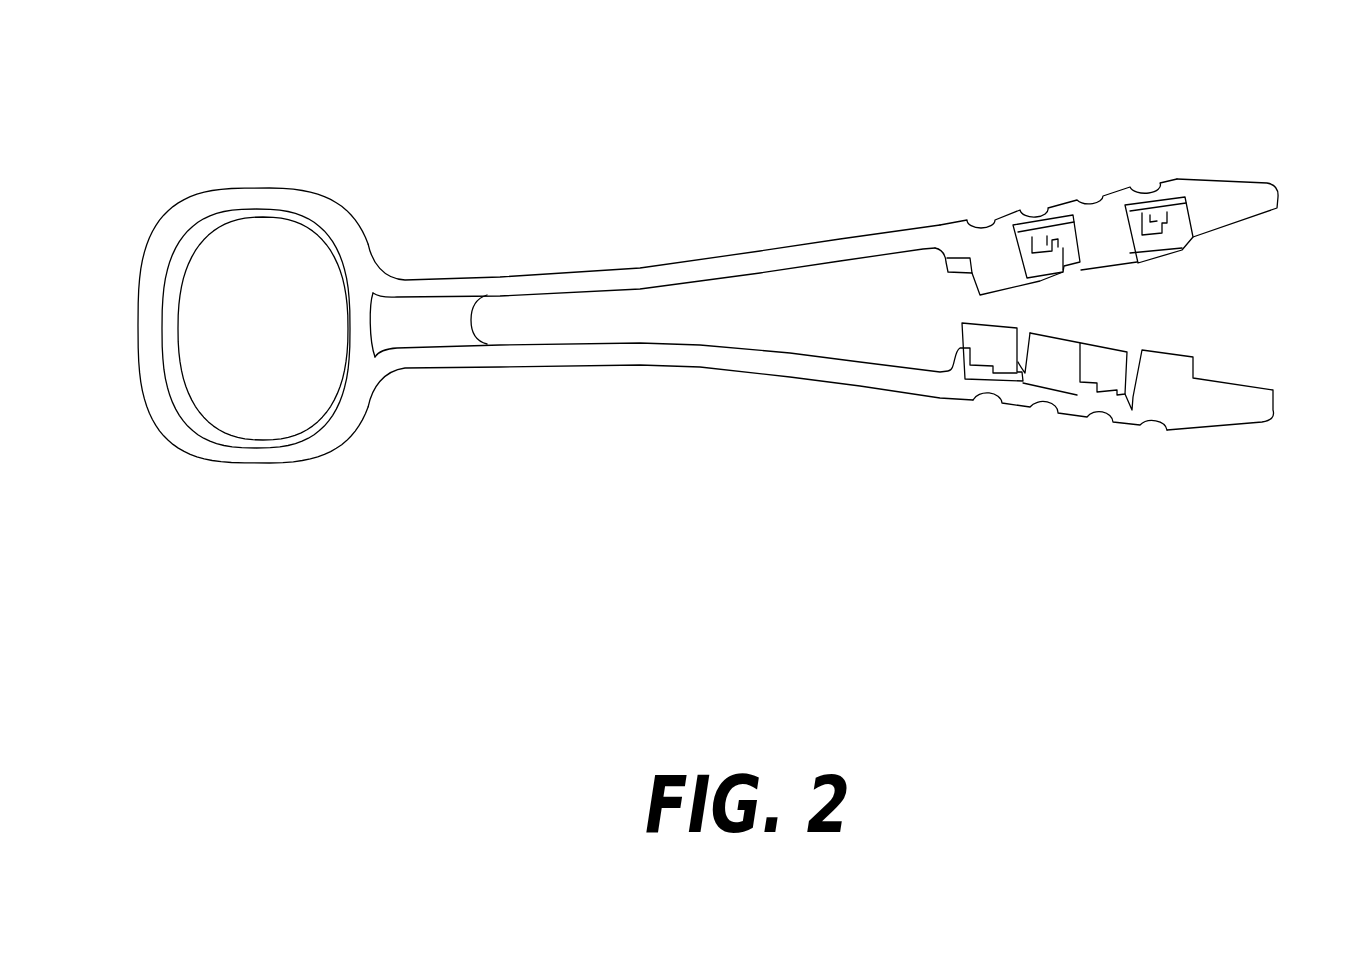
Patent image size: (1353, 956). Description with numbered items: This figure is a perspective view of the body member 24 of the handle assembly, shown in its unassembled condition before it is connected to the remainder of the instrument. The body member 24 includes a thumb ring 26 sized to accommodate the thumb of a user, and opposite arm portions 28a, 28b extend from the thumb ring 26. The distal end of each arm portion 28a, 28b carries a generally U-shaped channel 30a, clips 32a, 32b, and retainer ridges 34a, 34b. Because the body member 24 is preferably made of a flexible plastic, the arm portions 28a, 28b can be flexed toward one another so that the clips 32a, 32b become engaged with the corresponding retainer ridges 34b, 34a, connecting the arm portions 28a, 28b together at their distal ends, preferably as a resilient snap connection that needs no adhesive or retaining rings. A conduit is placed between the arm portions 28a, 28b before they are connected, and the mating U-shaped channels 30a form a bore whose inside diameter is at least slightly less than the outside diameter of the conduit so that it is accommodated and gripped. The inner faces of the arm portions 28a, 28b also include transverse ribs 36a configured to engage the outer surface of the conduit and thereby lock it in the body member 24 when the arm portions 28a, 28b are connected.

The body member 24 is at (474, 266).
The thumb ring 26 is at (317, 432).
The arm portion 28a is at (840, 256).
The arm portion 28b is at (733, 357).
The U-shaped channel 30a is at (1177, 226).
The clip 32a is at (1104, 235).
The clip 32b is at (1163, 380).
The retainer ridge 34a is at (1187, 226).
The retainer ridge 34b is at (983, 378).
The transverse rib 36a is at (1047, 270).